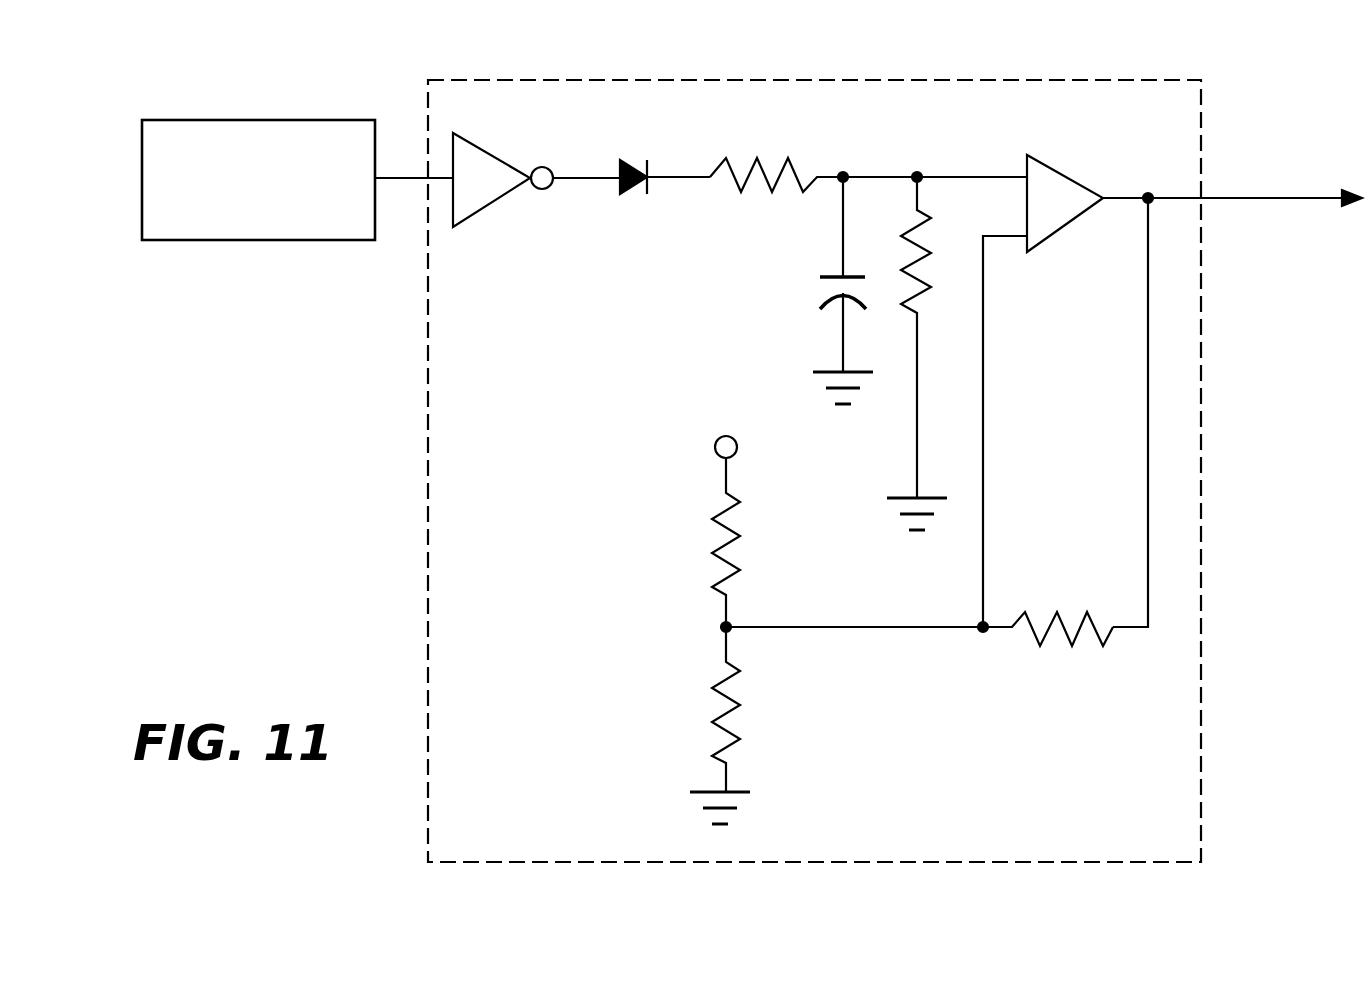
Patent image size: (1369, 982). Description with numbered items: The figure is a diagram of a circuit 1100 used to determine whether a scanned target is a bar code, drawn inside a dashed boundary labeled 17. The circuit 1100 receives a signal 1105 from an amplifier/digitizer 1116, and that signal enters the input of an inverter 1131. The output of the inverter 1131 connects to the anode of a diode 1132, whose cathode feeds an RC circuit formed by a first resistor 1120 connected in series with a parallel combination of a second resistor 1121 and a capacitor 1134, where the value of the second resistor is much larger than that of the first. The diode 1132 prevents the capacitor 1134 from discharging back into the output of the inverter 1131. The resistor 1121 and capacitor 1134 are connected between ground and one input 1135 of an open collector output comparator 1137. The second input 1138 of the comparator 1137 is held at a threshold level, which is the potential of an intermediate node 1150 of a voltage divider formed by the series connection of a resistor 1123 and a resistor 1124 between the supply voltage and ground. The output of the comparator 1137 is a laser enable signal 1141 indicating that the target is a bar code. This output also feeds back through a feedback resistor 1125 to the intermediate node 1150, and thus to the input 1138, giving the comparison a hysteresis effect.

The laser device boundary 17 is at (428, 405).
The circuit 1100 is at (658, 70).
The amplifier/digitizer 1116 is at (203, 242).
The signal 1105 is at (400, 180).
The inverter 1131 is at (497, 200).
The diode 1132 is at (632, 185).
The resistor 1120 is at (755, 187).
The capacitor 1134 is at (838, 304).
The resistor 1121 is at (917, 455).
The input 1135 is at (987, 177).
The second input 1138 is at (1008, 236).
The open collector output comparator 1137 is at (1067, 227).
The laser enable signal 1141 is at (1122, 198).
The resistor 1125 is at (1053, 635).
The resistor 1123 is at (740, 577).
The intermediate node 1150 is at (717, 682).
The resistor 1124 is at (735, 712).